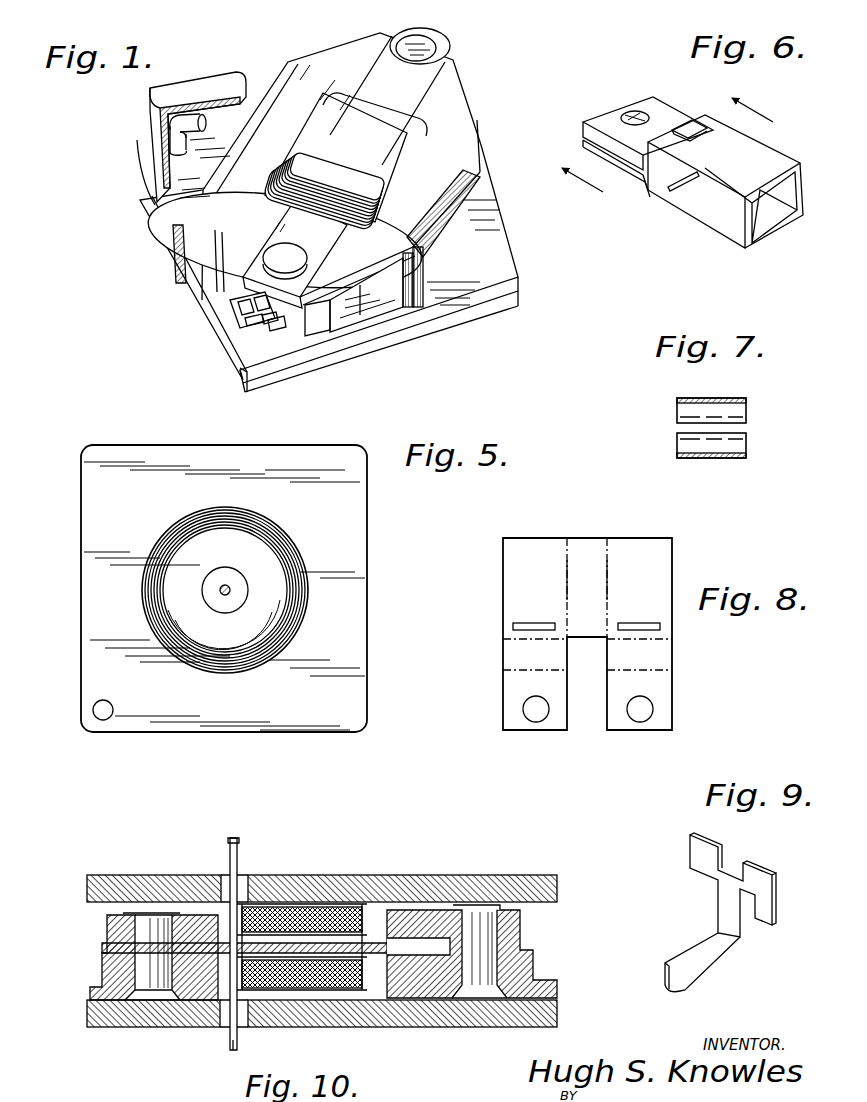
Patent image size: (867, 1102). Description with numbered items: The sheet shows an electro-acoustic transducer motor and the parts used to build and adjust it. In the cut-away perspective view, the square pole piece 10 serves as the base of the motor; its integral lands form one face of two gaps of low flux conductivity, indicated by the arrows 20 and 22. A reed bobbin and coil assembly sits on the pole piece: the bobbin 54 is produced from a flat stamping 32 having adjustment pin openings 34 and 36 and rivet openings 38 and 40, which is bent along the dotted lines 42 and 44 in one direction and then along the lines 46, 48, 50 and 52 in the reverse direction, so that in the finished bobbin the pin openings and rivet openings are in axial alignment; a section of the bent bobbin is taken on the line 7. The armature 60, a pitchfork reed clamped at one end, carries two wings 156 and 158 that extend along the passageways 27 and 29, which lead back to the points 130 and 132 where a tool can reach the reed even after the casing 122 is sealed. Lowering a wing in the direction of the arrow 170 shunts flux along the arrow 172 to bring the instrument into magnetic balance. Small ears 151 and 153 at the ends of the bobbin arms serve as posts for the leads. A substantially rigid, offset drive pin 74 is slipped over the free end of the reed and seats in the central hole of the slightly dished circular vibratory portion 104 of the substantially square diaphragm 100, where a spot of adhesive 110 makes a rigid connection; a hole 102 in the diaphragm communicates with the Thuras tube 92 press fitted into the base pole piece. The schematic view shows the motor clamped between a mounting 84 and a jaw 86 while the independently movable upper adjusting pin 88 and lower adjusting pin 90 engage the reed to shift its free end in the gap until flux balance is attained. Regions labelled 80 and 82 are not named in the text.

In FIG. 1, the pole piece 10 is at (510, 290).
In FIG. 1, the gap 20 is at (252, 308).
In FIG. 10, the gap 20 is at (98, 944).
In FIG. 10, the gap 22 is at (437, 940).
In FIG. 1, the passageway 27 is at (228, 296).
In FIG. 1, the passageway 29 is at (340, 308).
In FIG. 8, the stamping 32 is at (675, 546).
In FIG. 6, the adjustment pin opening 34 is at (693, 124).
In FIG. 8, the adjustment pin opening 34 is at (514, 626).
In FIG. 6, the adjustment pin opening 36 is at (686, 182).
In FIG. 8, the adjustment pin opening 36 is at (655, 622).
In FIG. 6, the rivet opening 38 is at (632, 112).
In FIG. 8, the rivet opening 38 is at (530, 714).
In FIG. 8, the rivet opening 40 is at (648, 710).
In FIG. 8, the bending line 42 is at (570, 538).
In FIG. 8, the bending line 44 is at (607, 538).
In FIG. 8, the bending line 46 is at (507, 642).
In FIG. 8, the bending line 48 is at (508, 672).
In FIG. 8, the bending line 50 is at (676, 641).
In FIG. 8, the bending line 52 is at (675, 672).
In FIG. 6, the bobbin 54 is at (776, 152).
In FIG. 1, the armature 60 is at (277, 330).
In FIG. 6, the section line 7 is at (666, 145).
In FIG. 7, the section line 7 is at (711, 428).
In FIG. 9, the drive pin 74 is at (772, 868).
In FIG. 1, the armature lever 80 is at (205, 252).
In FIG. 1, the magnet block 82 is at (405, 305).
In FIG. 10, the mounting 84 is at (150, 1015).
In FIG. 10, the jaw 86 is at (122, 880).
In FIG. 10, the upper adjusting pin 88 is at (240, 853).
In FIG. 10, the lower adjusting pin 90 is at (230, 1040).
In FIG. 1, the Thuras tube 92 is at (178, 128).
In FIG. 5, the diaphragm 100 is at (298, 713).
In FIG. 5, the hole 102 is at (103, 721).
In FIG. 5, the circular vibratory portion 104 is at (268, 550).
In FIG. 5, the spot of adhesive 110 is at (228, 594).
In FIG. 1, the casing 122 is at (230, 77).
In FIG. 1, the access point 130 is at (215, 197).
In FIG. 1, the access point 132 is at (415, 252).
In FIG. 1, the ear 151 is at (265, 322).
In FIG. 1, the ear 153 is at (243, 385).
In FIG. 1, the wing 156 is at (238, 306).
In FIG. 1, the wing 158 is at (315, 322).
In FIG. 1, the arrow 170 is at (255, 318).
In FIG. 1, the arrow 172 is at (388, 36).